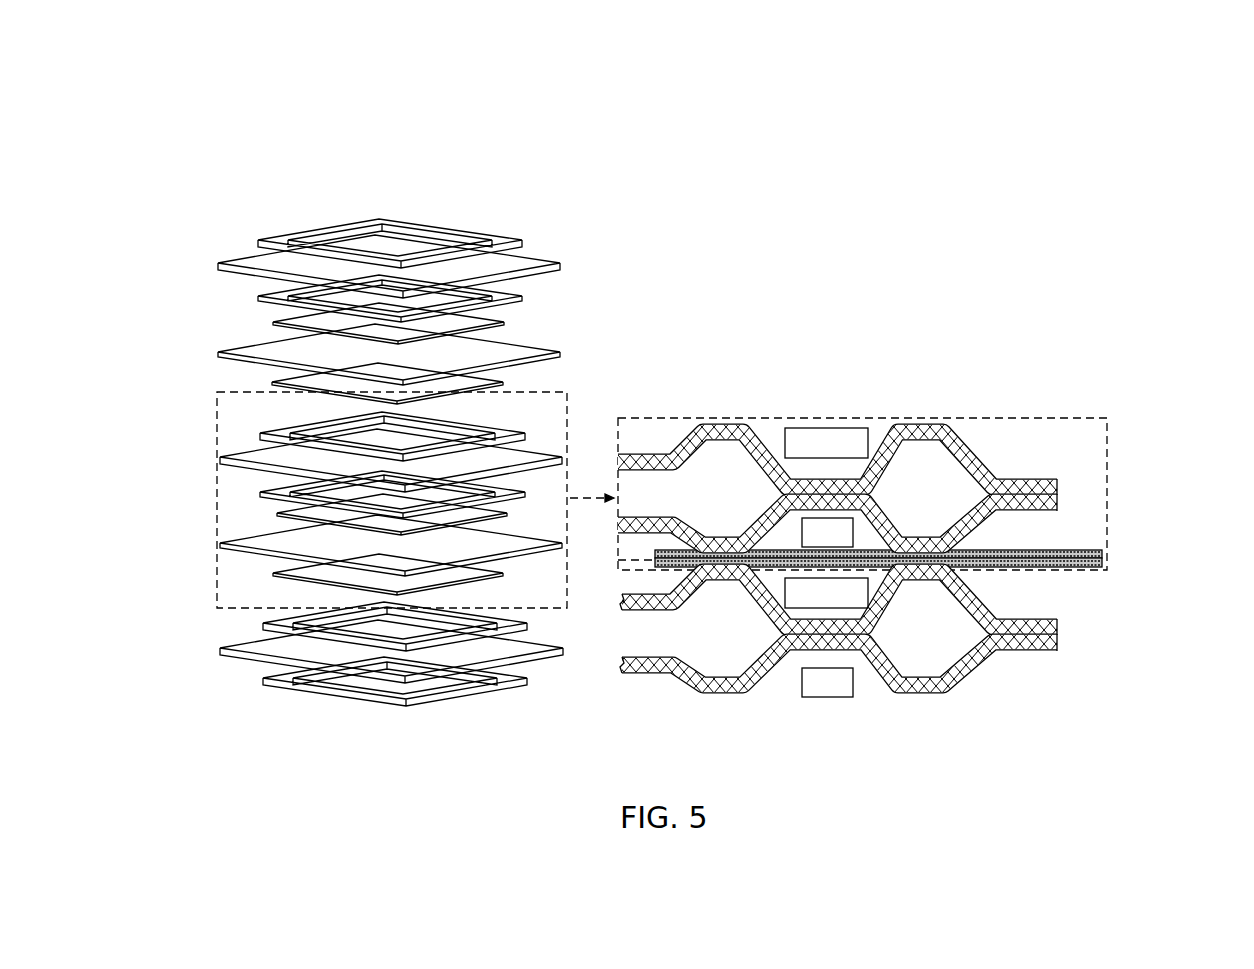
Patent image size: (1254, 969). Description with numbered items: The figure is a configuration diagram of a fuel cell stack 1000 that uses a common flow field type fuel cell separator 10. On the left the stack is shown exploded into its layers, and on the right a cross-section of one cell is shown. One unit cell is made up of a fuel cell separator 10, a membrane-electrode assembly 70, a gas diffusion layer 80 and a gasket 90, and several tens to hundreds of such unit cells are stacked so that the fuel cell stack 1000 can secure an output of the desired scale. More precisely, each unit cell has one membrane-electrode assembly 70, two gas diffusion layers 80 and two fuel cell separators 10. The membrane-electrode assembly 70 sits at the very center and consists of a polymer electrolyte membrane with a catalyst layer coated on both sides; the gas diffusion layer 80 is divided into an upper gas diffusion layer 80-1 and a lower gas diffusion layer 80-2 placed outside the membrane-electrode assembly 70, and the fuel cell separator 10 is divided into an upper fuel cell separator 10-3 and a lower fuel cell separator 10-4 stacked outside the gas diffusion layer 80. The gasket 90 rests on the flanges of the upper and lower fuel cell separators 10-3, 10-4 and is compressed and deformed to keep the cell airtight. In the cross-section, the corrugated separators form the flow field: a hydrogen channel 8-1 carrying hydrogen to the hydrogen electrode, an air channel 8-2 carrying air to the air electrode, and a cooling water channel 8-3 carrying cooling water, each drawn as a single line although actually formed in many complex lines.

The fuel cell stack 1000 is at (497, 150).
The gasket 90 is at (505, 232).
The fuel cell separator 10 is at (512, 262).
The upper fuel cell separator 10-3 is at (1060, 487).
The lower fuel cell separator 10-4 is at (1060, 503).
The membrane-electrode assembly 70 is at (518, 350).
The gas diffusion layer 80 is at (668, 452).
The upper gas diffusion layer 80-1 is at (273, 323).
The lower gas diffusion layer 80-2 is at (273, 382).
The hydrogen channel 8-1 is at (775, 433).
The air channel 8-2 is at (868, 532).
The cooling water channel 8-3 is at (720, 457).